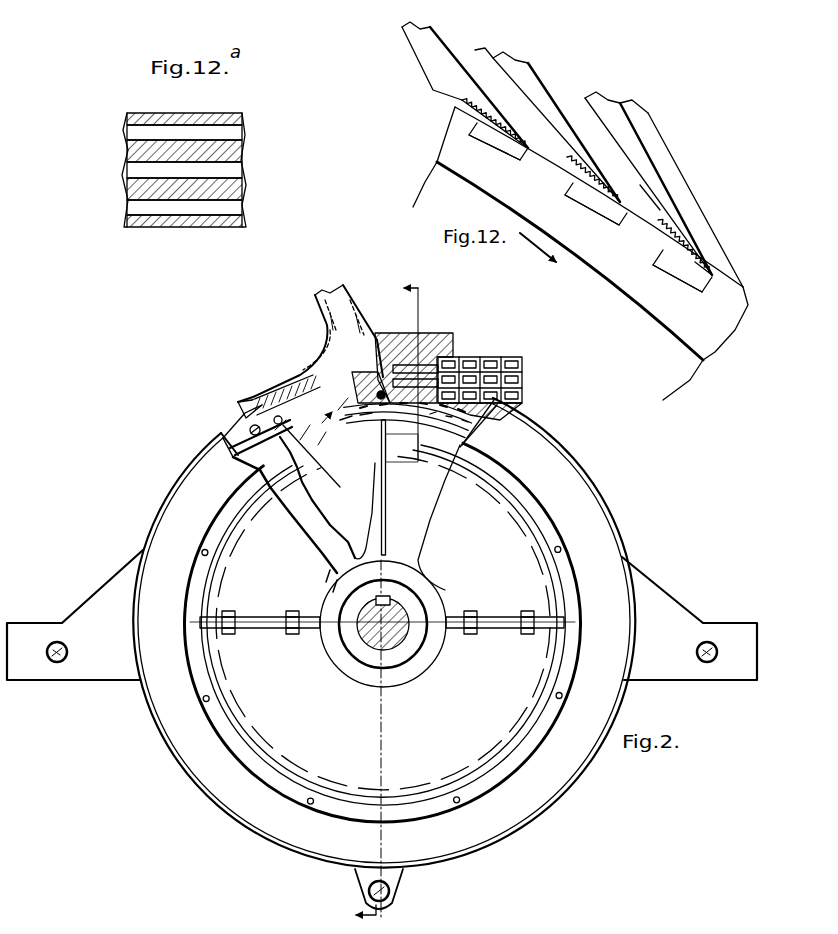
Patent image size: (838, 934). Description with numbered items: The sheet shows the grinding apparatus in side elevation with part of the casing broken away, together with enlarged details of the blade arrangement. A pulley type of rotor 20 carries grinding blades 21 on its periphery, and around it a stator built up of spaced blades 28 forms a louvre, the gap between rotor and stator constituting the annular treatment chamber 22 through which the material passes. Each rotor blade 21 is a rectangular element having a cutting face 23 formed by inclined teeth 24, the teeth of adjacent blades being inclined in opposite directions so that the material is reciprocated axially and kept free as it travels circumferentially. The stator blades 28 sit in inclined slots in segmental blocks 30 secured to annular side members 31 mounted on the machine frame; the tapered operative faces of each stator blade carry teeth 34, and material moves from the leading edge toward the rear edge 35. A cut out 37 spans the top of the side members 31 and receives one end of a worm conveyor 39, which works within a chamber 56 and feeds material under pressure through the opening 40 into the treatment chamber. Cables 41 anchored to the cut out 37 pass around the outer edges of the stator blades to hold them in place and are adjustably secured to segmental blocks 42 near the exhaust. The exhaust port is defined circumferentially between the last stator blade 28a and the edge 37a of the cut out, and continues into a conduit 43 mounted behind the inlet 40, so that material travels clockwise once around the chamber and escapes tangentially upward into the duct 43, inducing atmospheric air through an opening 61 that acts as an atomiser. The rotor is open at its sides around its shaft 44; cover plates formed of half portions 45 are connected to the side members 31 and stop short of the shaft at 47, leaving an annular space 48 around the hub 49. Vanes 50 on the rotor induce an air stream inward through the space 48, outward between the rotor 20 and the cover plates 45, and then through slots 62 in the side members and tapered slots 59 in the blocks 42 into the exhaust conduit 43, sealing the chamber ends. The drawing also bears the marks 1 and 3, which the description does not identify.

In FIG. 2, the section line indicator 1 is at (378, 604).
In FIG. 2, the feed chute 3 is at (335, 300).
In FIG. 12A, the rotor 20 is at (185, 158).
In FIG. 12, the rotor 20 is at (623, 280).
In FIG. 2, the rotor 20 is at (404, 425).
In FIG. 12A, the grinding blades 21 is at (246, 136).
In FIG. 12, the grinding blades 21 is at (687, 277).
In FIG. 2, the grinding blades 21 is at (468, 430).
In FIG. 12, the annular treatment chamber 22 is at (575, 174).
In FIG. 12, the cutting face 23 is at (688, 286).
In FIG. 12A, the inclined teeth 24 is at (166, 150).
In FIG. 12, the stator blades 28 is at (650, 178).
In FIG. 2, the last stator blade 28a is at (238, 455).
In FIG. 12, the segmental blocks 30 is at (470, 60).
In FIG. 2, the annular side members 31 is at (405, 470).
In FIG. 12, the teeth 34 is at (680, 250).
In FIG. 12, the rear edge 35 is at (702, 273).
In FIG. 2, the cut out 37 is at (440, 340).
In FIG. 2, the edge of cut out 37a is at (358, 384).
In FIG. 2, the worm conveyor 39 is at (512, 392).
In FIG. 2, the inlet opening 40 is at (450, 432).
In FIG. 2, the cables 41 is at (252, 427).
In FIG. 2, the segmental blocks 42 is at (300, 400).
In FIG. 2, the exhaust conduit 43 is at (336, 326).
In FIG. 2, the shaft 44 is at (366, 640).
In FIG. 2, the cover plate half portions 45 is at (510, 522).
In FIG. 2, the inner edge position of cover plate 47 is at (444, 646).
In FIG. 2, the annular space 48 is at (426, 660).
In FIG. 2, the hub 49 is at (400, 660).
In FIG. 2, the vanes 50 is at (387, 520).
In FIG. 2, the chamber 56 is at (505, 358).
In FIG. 2, the tapered slots 59 is at (276, 398).
In FIG. 2, the air opening 61 is at (258, 404).
In FIG. 2, the slots 62 is at (352, 418).